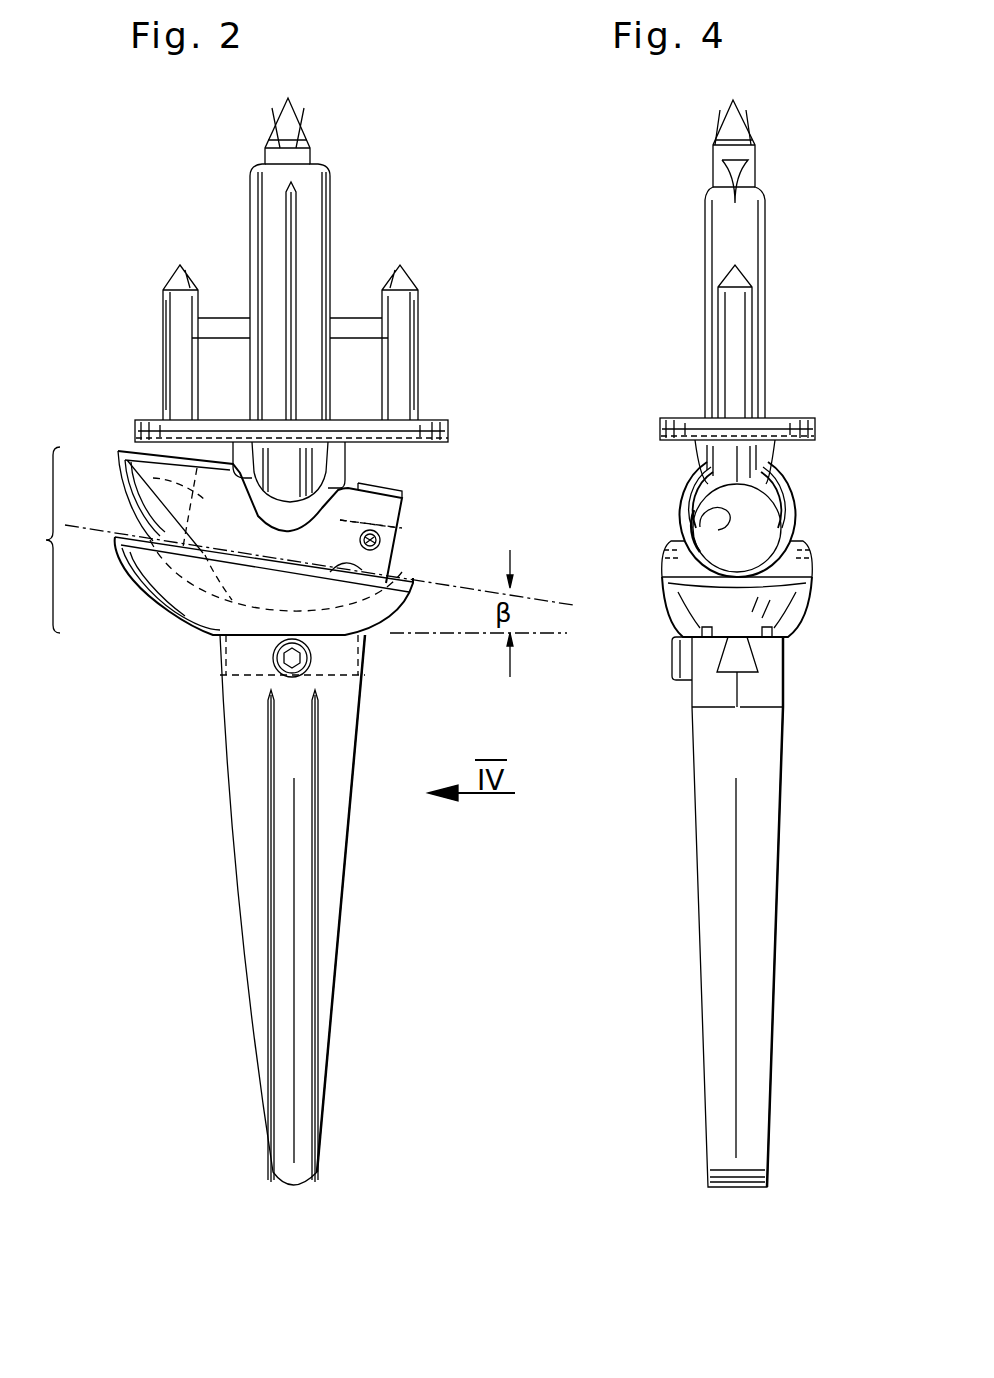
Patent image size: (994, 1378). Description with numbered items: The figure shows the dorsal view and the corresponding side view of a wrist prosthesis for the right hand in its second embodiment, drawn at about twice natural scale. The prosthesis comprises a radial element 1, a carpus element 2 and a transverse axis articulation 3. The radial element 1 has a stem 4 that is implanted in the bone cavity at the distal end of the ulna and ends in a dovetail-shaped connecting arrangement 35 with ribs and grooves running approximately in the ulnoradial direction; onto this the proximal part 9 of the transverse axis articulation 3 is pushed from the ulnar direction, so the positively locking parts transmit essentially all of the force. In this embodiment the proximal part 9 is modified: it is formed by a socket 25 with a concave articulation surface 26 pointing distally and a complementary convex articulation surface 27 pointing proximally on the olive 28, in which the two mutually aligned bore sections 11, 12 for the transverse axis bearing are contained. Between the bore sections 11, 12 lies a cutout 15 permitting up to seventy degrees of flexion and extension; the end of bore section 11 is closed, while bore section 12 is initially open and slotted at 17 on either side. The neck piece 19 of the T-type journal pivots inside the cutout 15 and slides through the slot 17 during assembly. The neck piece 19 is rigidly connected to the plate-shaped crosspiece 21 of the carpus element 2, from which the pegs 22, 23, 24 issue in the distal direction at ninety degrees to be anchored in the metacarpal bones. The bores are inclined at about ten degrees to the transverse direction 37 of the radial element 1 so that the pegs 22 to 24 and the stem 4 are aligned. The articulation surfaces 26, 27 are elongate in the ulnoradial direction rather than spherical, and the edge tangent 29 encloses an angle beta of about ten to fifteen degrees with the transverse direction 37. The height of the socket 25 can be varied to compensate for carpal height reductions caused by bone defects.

In FIG. 2, the radial element 1 is at (219, 860).
In FIG. 4, the radial element 1 is at (688, 848).
In FIG. 2, the carpus element 2 is at (203, 203).
In FIG. 4, the carpus element 2 is at (698, 200).
In FIG. 2, the transverse axis articulation 3 is at (272, 553).
In FIG. 2, the stem 4 is at (265, 992).
In FIG. 4, the stem 4 is at (720, 982).
In FIG. 2, the proximal part of the transverse axis articulation 9 is at (255, 553).
In FIG. 2, the bore section 11 is at (200, 500).
In FIG. 2, the bore section 12 is at (377, 520).
In FIG. 4, the bore section 12 is at (778, 556).
In FIG. 4, the cutout 15 is at (788, 490).
In FIG. 4, the slot 17 is at (718, 510).
In FIG. 4, the neck piece 19 is at (712, 457).
In FIG. 2, the crosspiece 21 is at (435, 422).
In FIG. 4, the crosspiece 21 is at (800, 420).
In FIG. 2, the peg 22 is at (170, 300).
In FIG. 2, the peg 23 is at (283, 150).
In FIG. 4, the peg 23 is at (737, 152).
In FIG. 2, the peg 24 is at (402, 303).
In FIG. 4, the peg 24 is at (738, 310).
In FIG. 2, the socket 25 is at (150, 585).
In FIG. 4, the socket 25 is at (795, 607).
In FIG. 2, the concave articulation surface 26 is at (228, 592).
In FIG. 2, the convex articulation surface 27 is at (392, 567).
In FIG. 2, the olive 28 is at (402, 502).
In FIG. 4, the olive 28 is at (783, 525).
In FIG. 2, the edge tangent 29 is at (537, 597).
In FIG. 4, the connecting arrangement 35 is at (747, 662).
In FIG. 2, the transverse direction of the radial element 37 is at (535, 636).